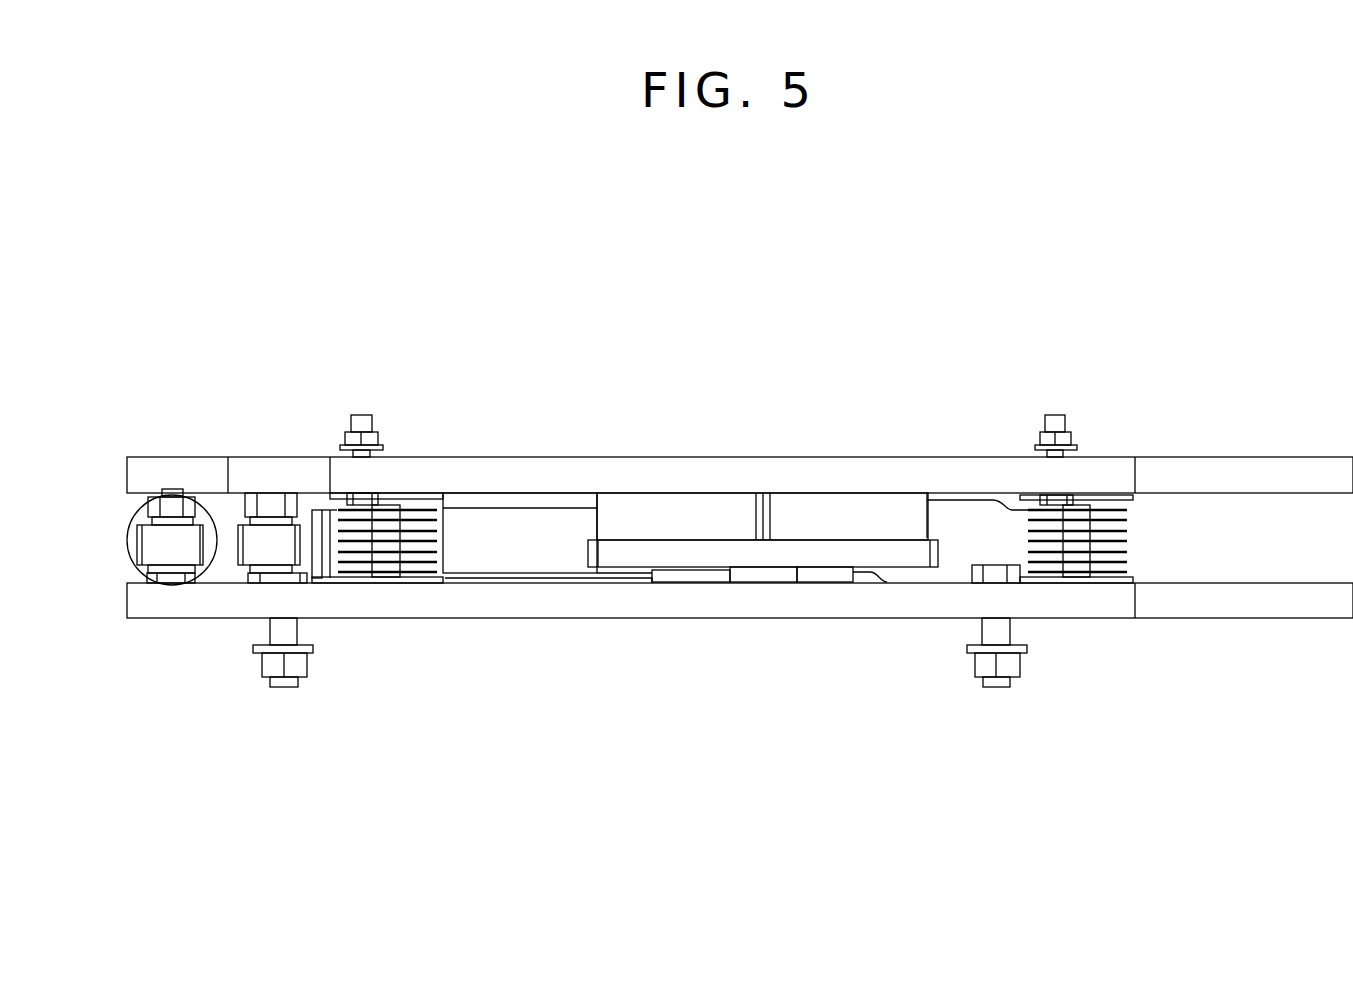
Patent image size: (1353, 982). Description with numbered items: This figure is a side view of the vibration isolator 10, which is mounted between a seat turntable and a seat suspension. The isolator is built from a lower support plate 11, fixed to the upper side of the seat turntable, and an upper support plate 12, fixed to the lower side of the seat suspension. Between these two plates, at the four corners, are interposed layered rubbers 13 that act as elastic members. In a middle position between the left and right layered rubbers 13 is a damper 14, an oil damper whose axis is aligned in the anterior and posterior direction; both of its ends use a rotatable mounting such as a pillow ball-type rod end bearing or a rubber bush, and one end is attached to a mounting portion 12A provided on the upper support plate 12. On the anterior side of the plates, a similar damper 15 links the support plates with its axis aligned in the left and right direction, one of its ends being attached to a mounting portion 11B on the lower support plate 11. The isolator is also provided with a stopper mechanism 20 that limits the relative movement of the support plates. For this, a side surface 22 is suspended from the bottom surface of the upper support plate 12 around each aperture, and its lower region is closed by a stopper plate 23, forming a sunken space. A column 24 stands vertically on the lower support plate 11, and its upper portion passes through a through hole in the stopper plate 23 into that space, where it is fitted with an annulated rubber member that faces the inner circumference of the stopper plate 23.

The vibration isolator 10 is at (827, 306).
The lower support plate 11 is at (713, 607).
The mounting portion 11B is at (172, 582).
The upper support plate 12 is at (762, 463).
The mounting portion 12A is at (275, 498).
The layered rubber 13 is at (437, 542).
The damper 14 is at (550, 520).
The damper 15 is at (130, 545).
The stopper mechanism 20 is at (685, 558).
The side surface 22 is at (868, 503).
The stopper plate 23 is at (840, 555).
The column 24 is at (768, 578).